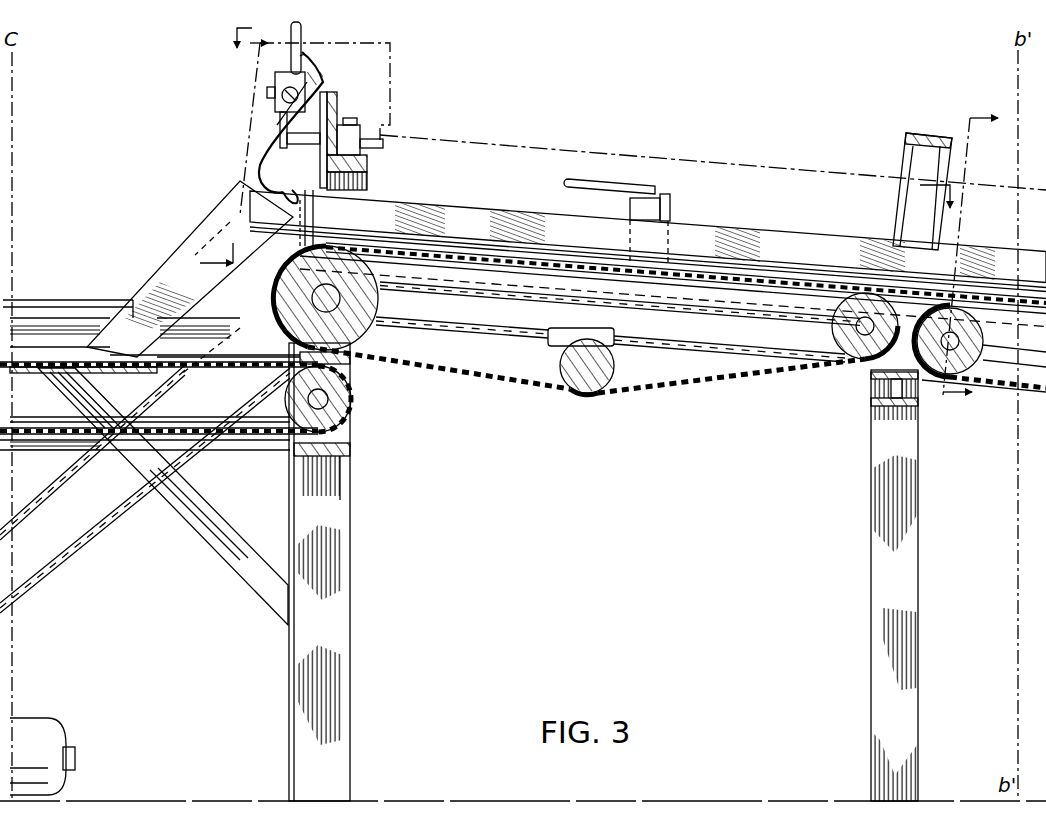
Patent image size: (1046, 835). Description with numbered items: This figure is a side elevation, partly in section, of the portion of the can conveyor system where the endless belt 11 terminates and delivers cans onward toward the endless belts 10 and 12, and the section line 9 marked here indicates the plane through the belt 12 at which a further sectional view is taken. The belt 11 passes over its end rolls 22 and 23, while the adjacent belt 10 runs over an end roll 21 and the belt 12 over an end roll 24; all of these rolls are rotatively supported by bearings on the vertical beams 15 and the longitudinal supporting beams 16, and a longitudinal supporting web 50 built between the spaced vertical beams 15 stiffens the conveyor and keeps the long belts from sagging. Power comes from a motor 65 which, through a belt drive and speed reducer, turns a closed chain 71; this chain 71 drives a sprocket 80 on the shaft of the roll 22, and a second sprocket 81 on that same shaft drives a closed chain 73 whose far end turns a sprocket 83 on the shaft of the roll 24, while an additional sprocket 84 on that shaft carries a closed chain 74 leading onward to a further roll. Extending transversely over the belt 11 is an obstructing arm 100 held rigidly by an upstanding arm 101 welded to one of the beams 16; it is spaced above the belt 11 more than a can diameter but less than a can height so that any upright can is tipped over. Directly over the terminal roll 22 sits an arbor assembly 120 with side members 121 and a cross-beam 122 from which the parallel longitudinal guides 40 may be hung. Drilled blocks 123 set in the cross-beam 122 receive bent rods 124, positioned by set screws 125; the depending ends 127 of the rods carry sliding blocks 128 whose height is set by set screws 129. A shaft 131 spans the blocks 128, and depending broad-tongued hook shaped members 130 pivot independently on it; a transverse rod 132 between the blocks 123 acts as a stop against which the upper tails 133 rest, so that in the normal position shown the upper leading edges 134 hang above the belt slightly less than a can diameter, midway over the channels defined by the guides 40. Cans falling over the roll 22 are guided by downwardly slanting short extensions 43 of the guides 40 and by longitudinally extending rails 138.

The section line 9- 9 is at (970, 258).
The endless belt 10 is at (200, 430).
The endless belt 11 is at (457, 370).
The endless belt 12 is at (1010, 372).
The vertical beam 15 is at (347, 580).
The longitudinal supporting beam 16 is at (583, 280).
The end roll 21 is at (288, 400).
The end roll 22 is at (360, 330).
The end roll 23 is at (840, 327).
The end roll 24 is at (967, 353).
The guide 40 is at (822, 240).
The extension 43 is at (213, 255).
The longitudinal supporting web 50 is at (17, 368).
The motor 65 is at (37, 727).
The closed chain 71 is at (97, 537).
The closed chain 73 is at (527, 330).
The closed chain 74 is at (1003, 360).
The sprocket 80 is at (155, 336).
The sprocket 81 is at (360, 296).
The sprocket 83 is at (927, 380).
The sprocket 84 is at (964, 386).
The obstructing arm 100 is at (595, 179).
The upstanding arm 101 is at (668, 210).
The arbor assembly 120 is at (394, 82).
The side member 121 is at (303, 240).
The cross-beam 122 is at (330, 100).
The drilled block 123 is at (360, 133).
The rod 124 is at (302, 26).
The set screw 125 is at (348, 118).
The depending end 127 is at (293, 150).
The sliding block 128 is at (275, 78).
The set screw 129 is at (282, 92).
The hook shaped member 130 is at (249, 162).
The shaft 131 is at (290, 102).
The transverse rod 132 is at (317, 49).
The upper tail 133 is at (321, 82).
The upper leading edge 134 is at (310, 186).
The rail 138 is at (37, 300).